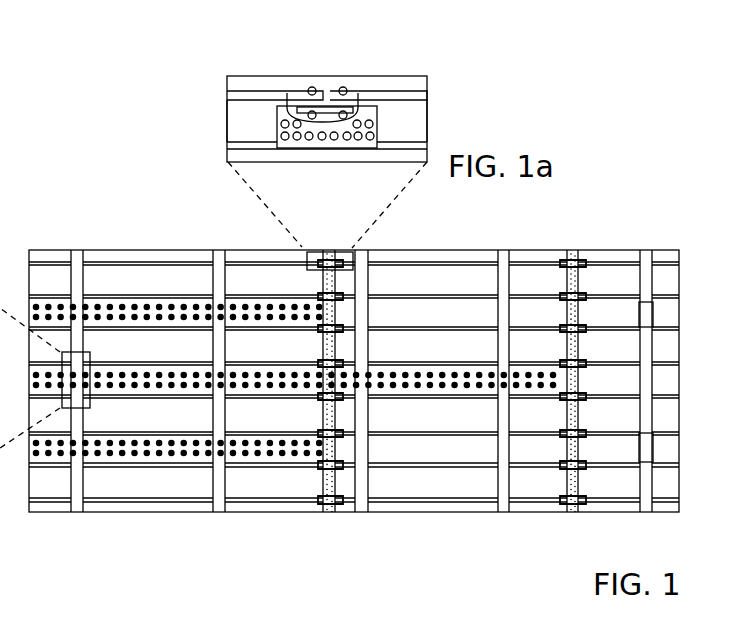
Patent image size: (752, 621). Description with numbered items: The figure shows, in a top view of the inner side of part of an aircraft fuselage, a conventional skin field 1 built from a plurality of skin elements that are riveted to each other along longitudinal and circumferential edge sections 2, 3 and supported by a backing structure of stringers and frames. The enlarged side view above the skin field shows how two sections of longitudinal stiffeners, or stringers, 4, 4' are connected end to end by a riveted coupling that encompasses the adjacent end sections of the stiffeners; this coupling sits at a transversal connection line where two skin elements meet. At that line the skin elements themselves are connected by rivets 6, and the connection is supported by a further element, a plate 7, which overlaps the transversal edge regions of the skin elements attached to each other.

In FIG. 1, the skin field 1 is at (87, 215).
In FIG. 1, the longitudinal edge section 2 is at (140, 447).
In FIG. 1, the circumferential edge section 3 is at (330, 492).
In FIG. 1A, the longitudinal stiffener 4 is at (191, 121).
In FIG. 1A, the longitudinal stiffener 4' is at (446, 119).
In FIG. 1A, the rivets 6 is at (378, 116).
In FIG. 1A, the plate 7 is at (305, 108).